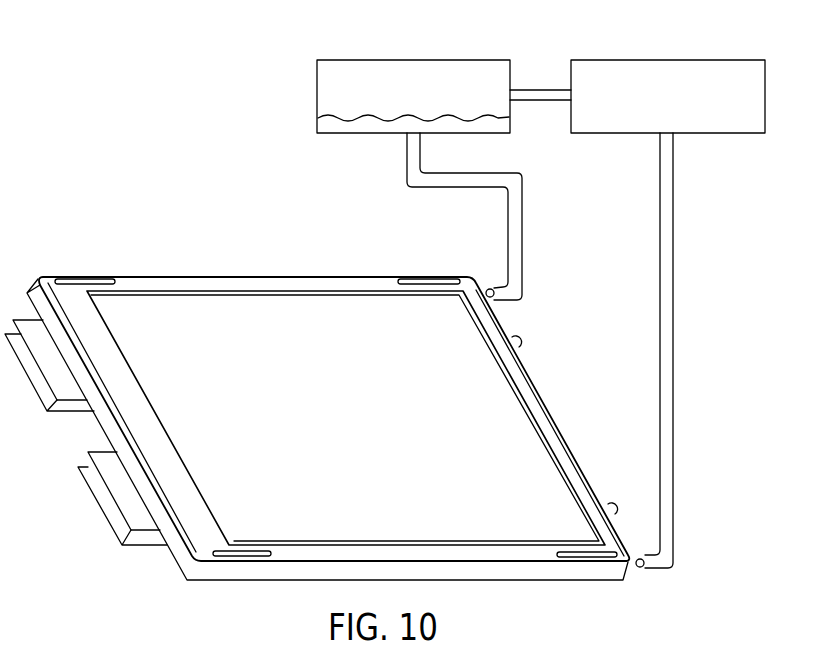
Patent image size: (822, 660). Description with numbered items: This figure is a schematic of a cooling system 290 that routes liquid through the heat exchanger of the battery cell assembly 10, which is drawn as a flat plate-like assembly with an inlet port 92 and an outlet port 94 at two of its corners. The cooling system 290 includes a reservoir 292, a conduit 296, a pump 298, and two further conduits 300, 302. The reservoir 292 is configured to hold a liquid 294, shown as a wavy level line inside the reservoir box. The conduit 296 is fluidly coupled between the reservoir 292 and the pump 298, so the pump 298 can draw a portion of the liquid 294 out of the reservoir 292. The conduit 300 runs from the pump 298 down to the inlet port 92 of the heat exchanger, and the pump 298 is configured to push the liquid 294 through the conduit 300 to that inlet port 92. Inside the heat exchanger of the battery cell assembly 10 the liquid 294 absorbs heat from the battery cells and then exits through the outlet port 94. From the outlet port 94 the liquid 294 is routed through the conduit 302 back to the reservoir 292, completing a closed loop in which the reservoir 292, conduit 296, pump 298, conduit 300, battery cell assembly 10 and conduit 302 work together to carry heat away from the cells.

The battery cell assembly 10 is at (222, 283).
The inlet port 92 is at (641, 568).
The outlet port 94 is at (490, 289).
The cooling system 290 is at (188, 92).
The reservoir 292 is at (413, 60).
The liquid 294 is at (332, 122).
The conduit 296 is at (538, 90).
The pump 298 is at (666, 60).
The conduit 300 is at (674, 341).
The conduit 302 is at (524, 233).